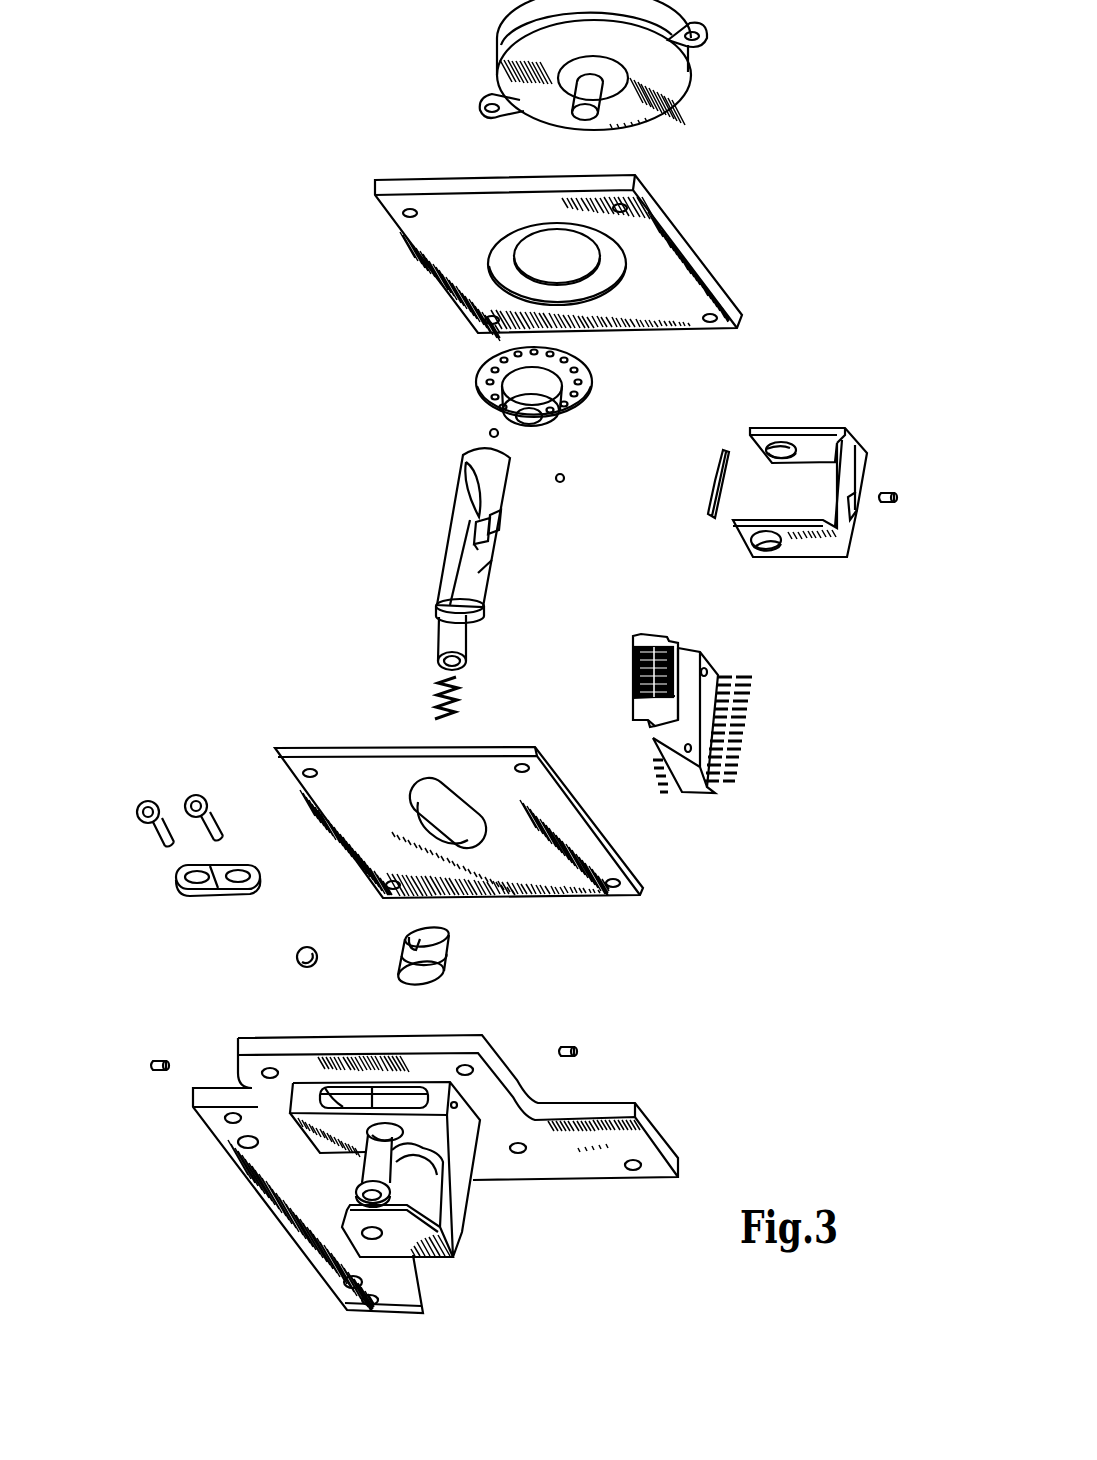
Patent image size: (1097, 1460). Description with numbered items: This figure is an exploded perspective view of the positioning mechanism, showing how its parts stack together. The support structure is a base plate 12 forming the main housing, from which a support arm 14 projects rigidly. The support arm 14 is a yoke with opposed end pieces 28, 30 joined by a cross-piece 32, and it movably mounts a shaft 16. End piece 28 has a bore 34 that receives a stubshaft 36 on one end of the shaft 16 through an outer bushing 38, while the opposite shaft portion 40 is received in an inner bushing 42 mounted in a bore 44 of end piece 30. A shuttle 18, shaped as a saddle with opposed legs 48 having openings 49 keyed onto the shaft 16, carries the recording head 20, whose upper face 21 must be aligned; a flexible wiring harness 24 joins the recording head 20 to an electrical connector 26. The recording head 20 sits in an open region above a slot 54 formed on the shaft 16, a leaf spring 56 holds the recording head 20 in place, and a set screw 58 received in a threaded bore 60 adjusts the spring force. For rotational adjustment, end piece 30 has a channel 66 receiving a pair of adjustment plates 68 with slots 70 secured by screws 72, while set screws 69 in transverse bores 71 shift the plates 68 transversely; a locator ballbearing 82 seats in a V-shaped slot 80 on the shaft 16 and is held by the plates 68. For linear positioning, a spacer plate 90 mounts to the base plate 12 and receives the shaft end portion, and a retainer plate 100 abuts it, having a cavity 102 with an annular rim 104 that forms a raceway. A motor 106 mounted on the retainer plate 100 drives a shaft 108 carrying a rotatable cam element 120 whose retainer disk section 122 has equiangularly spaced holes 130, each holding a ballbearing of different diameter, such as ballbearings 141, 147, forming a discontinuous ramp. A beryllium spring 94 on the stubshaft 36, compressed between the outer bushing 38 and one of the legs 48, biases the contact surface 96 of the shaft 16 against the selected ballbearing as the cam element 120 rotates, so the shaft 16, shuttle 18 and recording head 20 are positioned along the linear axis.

The motor 106 is at (693, 62).
The motor shaft 108 is at (580, 93).
The retainer plate 100 is at (658, 213).
The cavity 102 is at (535, 256).
The annular rim 104 is at (612, 276).
The rotatable cam element 120 is at (452, 360).
The retainer disk section 122 is at (496, 393).
The holes 130 is at (588, 404).
The ballbearing 147 is at (489, 434).
The shaft 16 is at (463, 527).
The V-shaped slot 80 is at (468, 488).
The shaft portion 40 is at (500, 490).
The flat 54 is at (484, 573).
The contact surface 96 is at (507, 457).
The stubshaft 36 is at (463, 645).
The ballbearing 141 is at (566, 478).
The spring 94 is at (437, 688).
The upper face 21 is at (628, 650).
The recording head 20 is at (632, 707).
The flexible wiring harness 24 is at (700, 672).
The electrical connector 26 is at (688, 792).
The shuttle 18 is at (803, 508).
The legs 48 is at (818, 433).
The openings 49 is at (772, 453).
The threaded bore 60 is at (850, 500).
The leaf spring 56 is at (714, 472).
The set screw 58 is at (886, 505).
The spacer plate 90 is at (328, 792).
The screws 72 is at (200, 815).
The adjustment plates 68 is at (203, 877).
The slots 70 is at (238, 876).
The locator ballbearing 82 is at (297, 958).
The inner bushing 42 is at (452, 957).
The base plate 12 is at (582, 1170).
The set screws 69 is at (577, 1046).
The channel 66 is at (342, 1088).
The end piece 30 is at (470, 1128).
The support arm 14 is at (370, 1187).
The transverse bores 71 is at (458, 1104).
The cross-piece 32 is at (468, 1190).
The bore 34 is at (424, 1262).
The bore 44 is at (362, 1136).
The outer bushing 38 is at (355, 1191).
The end piece 28 is at (348, 1226).